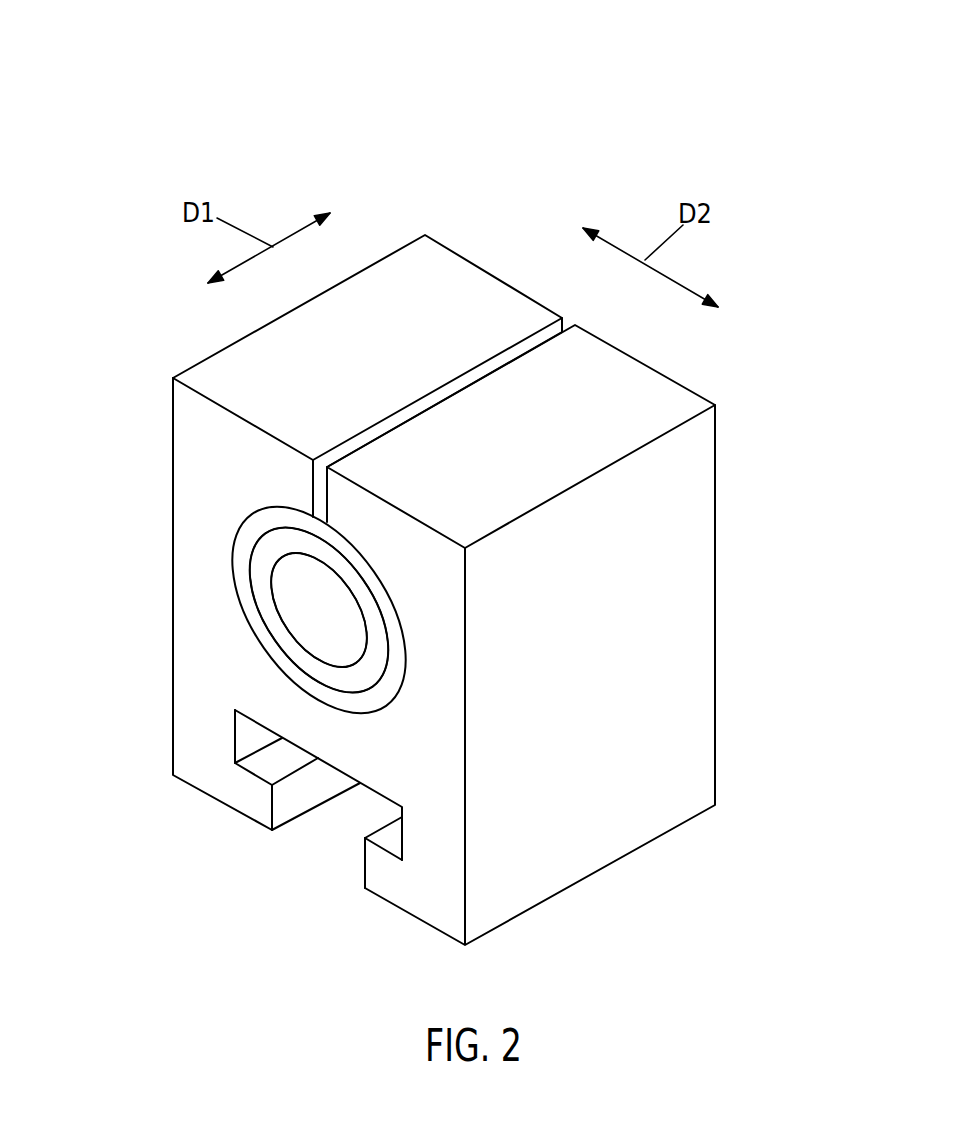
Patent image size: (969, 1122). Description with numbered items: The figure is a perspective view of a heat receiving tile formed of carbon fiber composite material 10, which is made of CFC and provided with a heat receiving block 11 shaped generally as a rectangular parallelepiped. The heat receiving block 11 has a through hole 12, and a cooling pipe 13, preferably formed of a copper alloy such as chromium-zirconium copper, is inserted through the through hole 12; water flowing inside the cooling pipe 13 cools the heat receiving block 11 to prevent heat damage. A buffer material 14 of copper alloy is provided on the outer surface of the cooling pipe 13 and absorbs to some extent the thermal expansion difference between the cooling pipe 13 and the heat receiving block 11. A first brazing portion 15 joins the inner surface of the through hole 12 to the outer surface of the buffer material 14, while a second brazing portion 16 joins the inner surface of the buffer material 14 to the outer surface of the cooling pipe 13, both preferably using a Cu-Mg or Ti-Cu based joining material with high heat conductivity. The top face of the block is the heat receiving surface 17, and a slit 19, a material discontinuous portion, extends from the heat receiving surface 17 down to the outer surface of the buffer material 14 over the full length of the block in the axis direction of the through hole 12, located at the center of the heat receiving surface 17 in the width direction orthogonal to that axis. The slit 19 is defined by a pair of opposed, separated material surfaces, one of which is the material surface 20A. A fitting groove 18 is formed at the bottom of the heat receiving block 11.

The heat receiving tile formed of carbon fiber composite material 10 is at (145, 100).
The heat receiving block 11 is at (633, 762).
The through hole 12 is at (260, 640).
The cooling pipe 13 is at (273, 620).
The buffer material 14 is at (247, 608).
The first brazing portion 15 is at (230, 560).
The second brazing portion 16 is at (247, 590).
The heat receiving surface 17 is at (375, 333).
The fitting groove 18 is at (335, 817).
The slit 19 is at (487, 372).
The material surface 20A is at (315, 481).